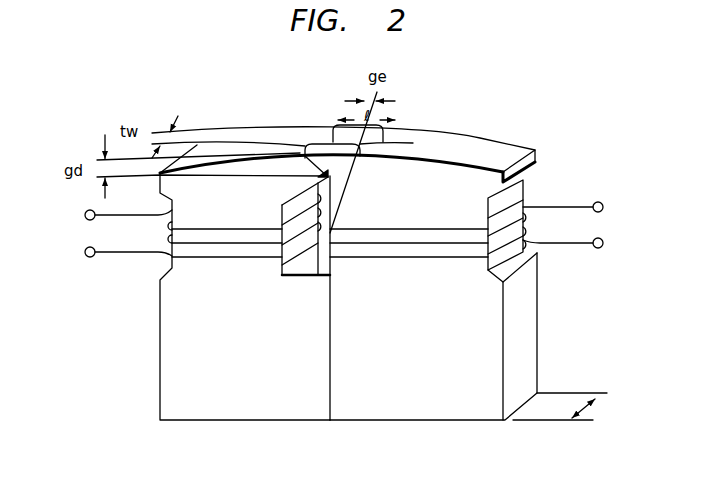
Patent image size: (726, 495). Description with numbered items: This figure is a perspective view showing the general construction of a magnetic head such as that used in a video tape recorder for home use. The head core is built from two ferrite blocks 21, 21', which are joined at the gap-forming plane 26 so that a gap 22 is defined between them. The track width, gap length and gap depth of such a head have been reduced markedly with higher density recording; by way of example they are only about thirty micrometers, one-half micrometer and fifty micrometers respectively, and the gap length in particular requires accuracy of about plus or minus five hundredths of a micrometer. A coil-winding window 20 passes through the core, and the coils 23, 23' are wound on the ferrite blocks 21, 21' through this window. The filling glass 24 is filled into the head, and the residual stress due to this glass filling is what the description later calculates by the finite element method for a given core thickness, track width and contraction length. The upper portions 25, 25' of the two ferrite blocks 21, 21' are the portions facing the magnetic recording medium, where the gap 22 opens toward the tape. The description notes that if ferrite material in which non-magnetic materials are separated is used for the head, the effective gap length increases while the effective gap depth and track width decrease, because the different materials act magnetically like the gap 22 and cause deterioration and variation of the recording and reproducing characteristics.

The coil-winding window 20 is at (323, 215).
The ferrite block 21 is at (213, 325).
The ferrite block 21' is at (468, 357).
The gap 22 is at (350, 142).
The coil 23 is at (128, 260).
The coil 23' is at (563, 246).
The filling glass 24 is at (330, 176).
The portion facing the magnetic recording medium 25 is at (343, 135).
The portion facing the magnetic recording medium 25' is at (447, 145).
The gap-forming plane 26 is at (330, 386).